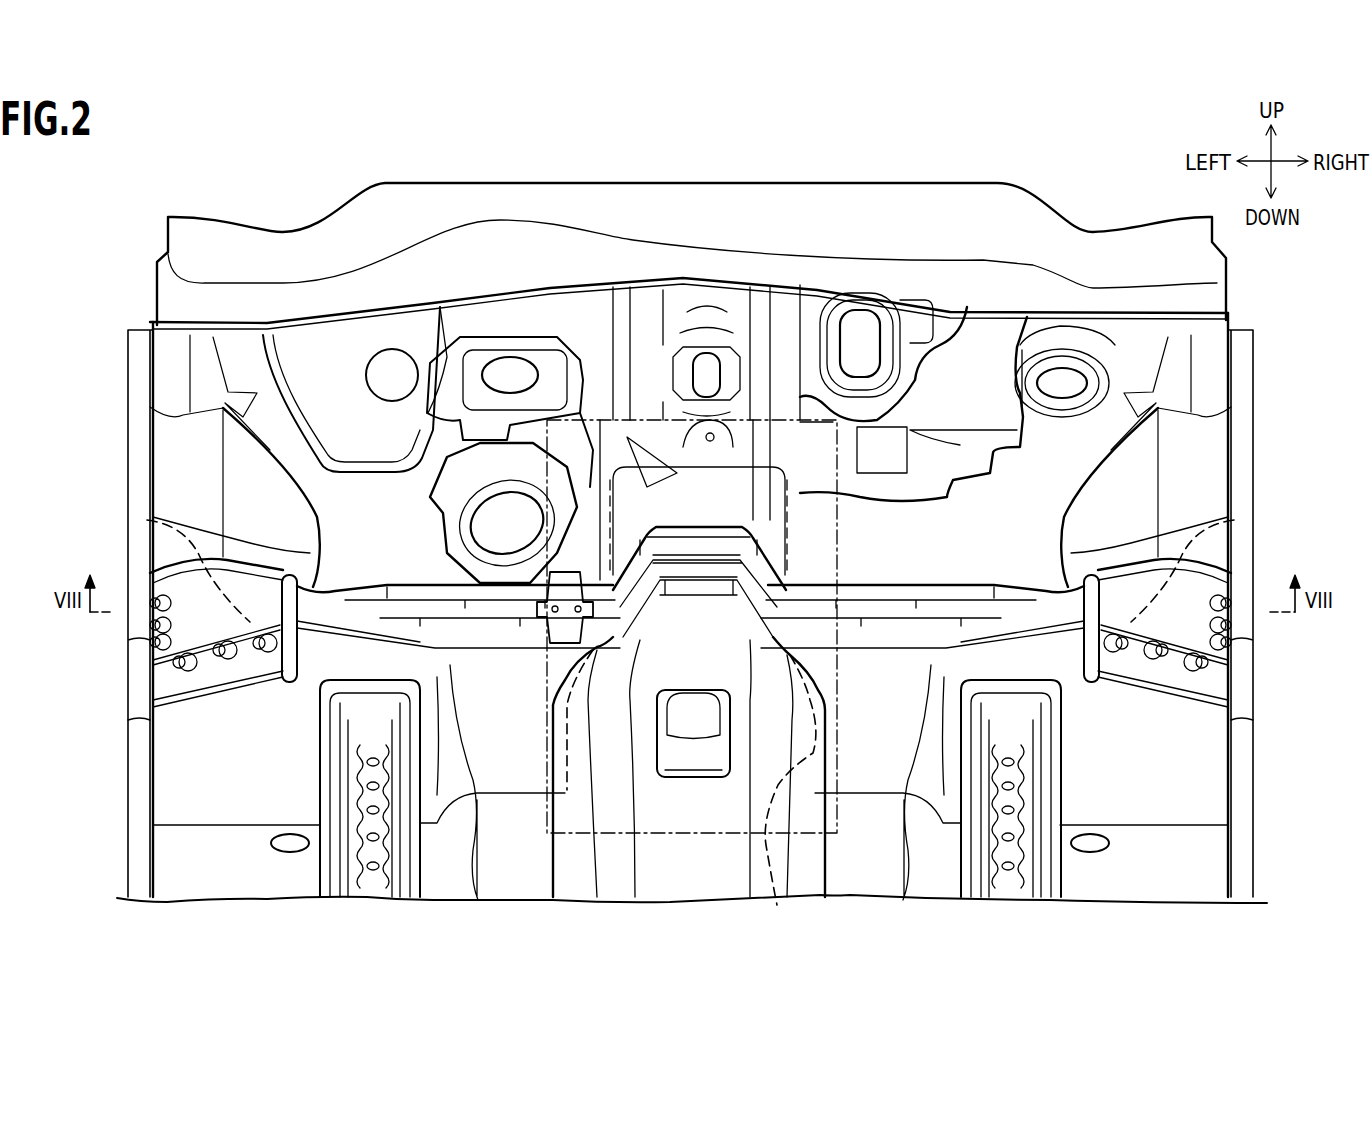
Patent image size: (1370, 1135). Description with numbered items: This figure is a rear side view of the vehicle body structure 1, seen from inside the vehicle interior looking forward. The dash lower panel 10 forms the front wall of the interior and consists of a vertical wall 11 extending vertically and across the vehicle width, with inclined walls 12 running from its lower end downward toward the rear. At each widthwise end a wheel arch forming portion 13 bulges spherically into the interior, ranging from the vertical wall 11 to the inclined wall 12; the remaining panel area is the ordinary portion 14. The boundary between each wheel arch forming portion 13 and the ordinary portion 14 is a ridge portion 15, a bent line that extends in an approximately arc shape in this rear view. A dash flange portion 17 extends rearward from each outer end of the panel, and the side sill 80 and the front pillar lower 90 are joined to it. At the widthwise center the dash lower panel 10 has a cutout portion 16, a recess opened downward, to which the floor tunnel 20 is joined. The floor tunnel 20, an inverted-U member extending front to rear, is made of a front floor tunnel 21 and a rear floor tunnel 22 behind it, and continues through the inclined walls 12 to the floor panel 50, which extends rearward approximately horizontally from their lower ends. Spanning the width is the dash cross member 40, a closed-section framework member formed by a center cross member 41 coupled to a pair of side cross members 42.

The vehicle body structure 1 is at (1068, 167).
The dash lower panel 10 is at (500, 285).
The vertical wall 11 is at (583, 310).
The inclined wall 12 is at (518, 757).
The wheel arch forming portion 13 is at (187, 488).
The ordinary portion 14 is at (173, 359).
The ridge portion 15 is at (147, 520).
The cutout portion 16 is at (777, 905).
The dash flange portion 17 is at (151, 440).
The floor tunnel 20 is at (692, 564).
The front floor tunnel 21 is at (801, 548).
The rear floor tunnel 22 is at (677, 902).
The dash cross member 40 is at (690, 396).
The center cross member 41 is at (700, 518).
The side cross member 42 is at (374, 586).
The floor panel 50 is at (462, 848).
The side sill 80 is at (140, 796).
The front pillar lower 90 is at (131, 385).